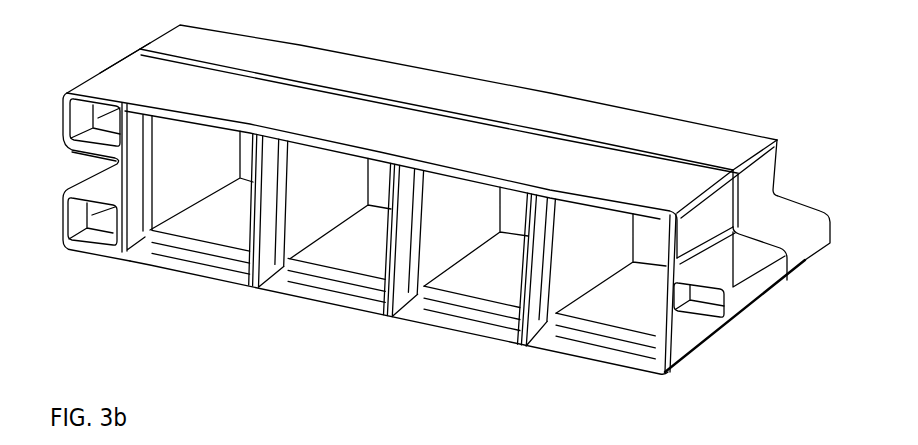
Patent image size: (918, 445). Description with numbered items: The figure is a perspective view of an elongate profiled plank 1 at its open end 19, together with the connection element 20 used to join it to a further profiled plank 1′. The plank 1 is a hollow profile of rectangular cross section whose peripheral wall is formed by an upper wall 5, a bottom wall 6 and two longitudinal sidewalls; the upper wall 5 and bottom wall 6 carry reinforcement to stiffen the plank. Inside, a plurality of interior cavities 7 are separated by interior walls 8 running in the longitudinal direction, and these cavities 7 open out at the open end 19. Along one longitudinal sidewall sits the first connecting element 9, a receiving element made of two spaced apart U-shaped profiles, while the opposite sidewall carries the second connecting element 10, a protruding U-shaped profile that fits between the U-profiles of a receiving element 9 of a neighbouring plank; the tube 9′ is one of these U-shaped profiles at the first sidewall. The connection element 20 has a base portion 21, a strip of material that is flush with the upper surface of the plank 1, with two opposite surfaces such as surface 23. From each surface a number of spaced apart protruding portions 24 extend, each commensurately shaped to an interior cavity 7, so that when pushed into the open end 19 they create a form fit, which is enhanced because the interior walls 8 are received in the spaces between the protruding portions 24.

The profiled plank 1 is at (688, 358).
The further profiled plank 1′ is at (282, 42).
The upper wall 5 is at (641, 122).
The bottom wall 6 is at (603, 367).
The interior cavity 7 is at (312, 283).
The interior wall 8 is at (246, 280).
The first connecting element 9 is at (50, 130).
The upper tube channel 9′ is at (183, 43).
The second connecting element 10 is at (760, 288).
The open end 19 is at (127, 82).
The connection element 20 is at (740, 170).
The base portion 21 is at (763, 178).
The surface 23 is at (705, 338).
The protruding portion 24 is at (202, 173).